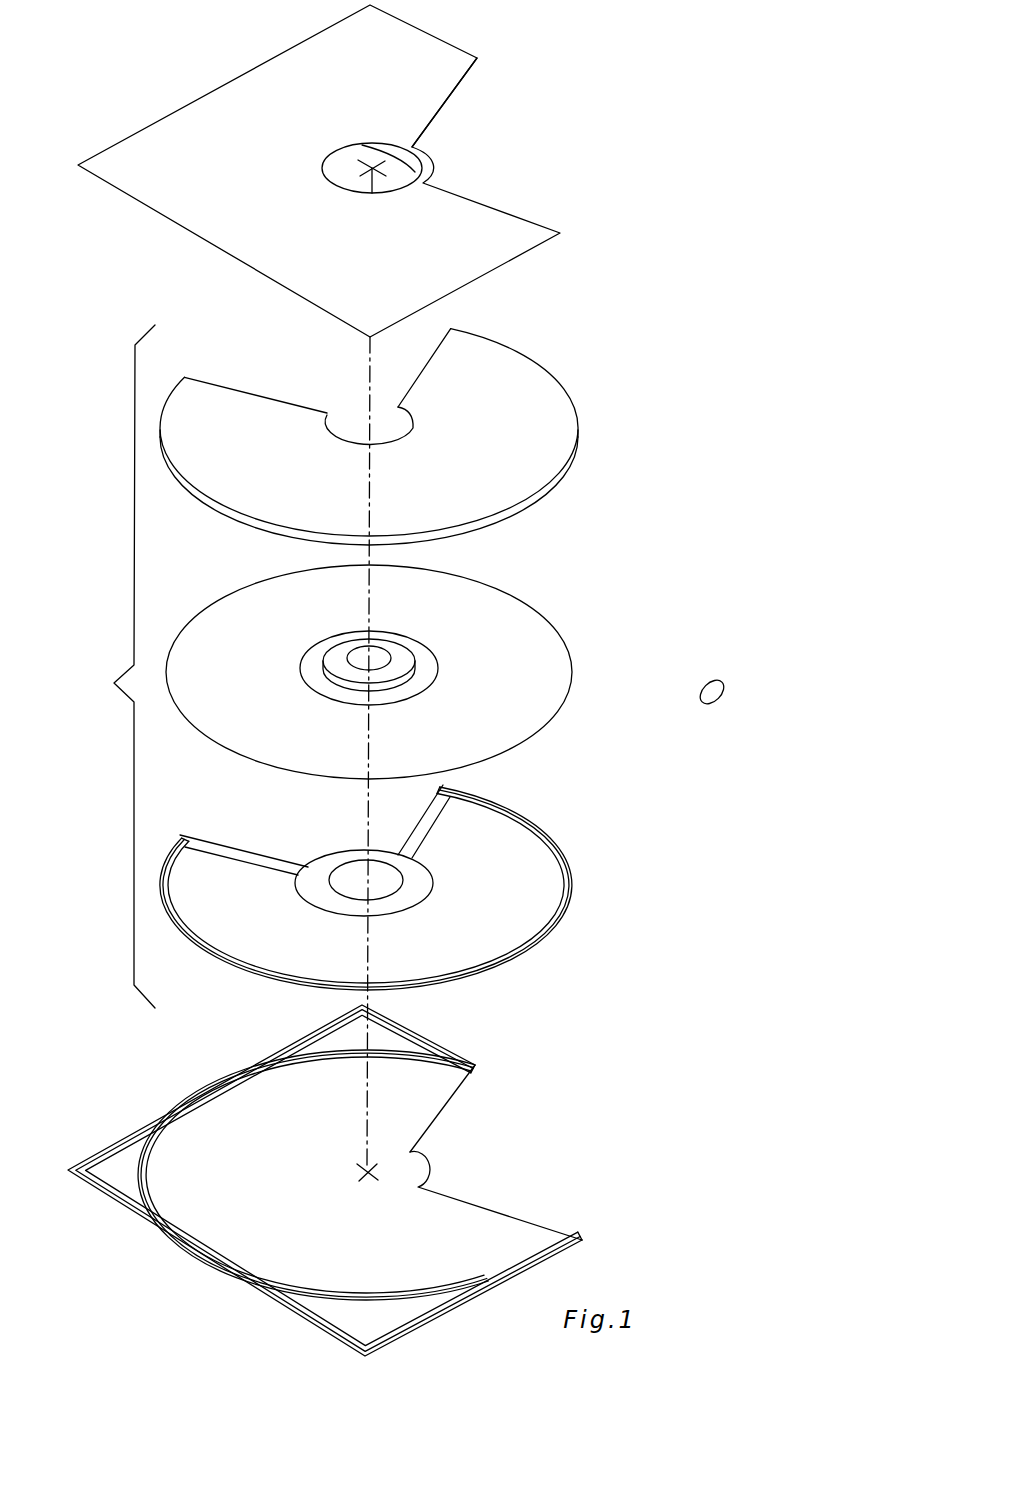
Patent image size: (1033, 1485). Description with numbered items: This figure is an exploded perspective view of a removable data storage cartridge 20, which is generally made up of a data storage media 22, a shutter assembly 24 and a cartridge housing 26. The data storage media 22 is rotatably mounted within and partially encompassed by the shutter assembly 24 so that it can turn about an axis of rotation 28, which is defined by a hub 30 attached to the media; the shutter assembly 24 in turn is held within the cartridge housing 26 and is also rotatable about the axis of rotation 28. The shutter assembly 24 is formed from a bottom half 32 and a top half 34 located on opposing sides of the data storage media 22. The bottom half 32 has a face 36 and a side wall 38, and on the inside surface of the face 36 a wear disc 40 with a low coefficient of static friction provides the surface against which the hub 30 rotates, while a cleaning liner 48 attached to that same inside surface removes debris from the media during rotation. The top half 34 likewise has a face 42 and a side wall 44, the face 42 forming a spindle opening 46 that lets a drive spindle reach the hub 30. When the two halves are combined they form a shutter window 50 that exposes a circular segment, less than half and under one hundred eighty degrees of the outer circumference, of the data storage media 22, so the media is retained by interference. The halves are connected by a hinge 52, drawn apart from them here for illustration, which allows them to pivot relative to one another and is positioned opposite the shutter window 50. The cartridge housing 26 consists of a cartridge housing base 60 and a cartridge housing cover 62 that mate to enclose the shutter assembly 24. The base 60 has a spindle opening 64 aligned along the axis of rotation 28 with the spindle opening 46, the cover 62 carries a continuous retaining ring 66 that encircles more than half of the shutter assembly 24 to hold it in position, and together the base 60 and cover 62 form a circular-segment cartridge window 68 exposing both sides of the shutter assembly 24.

The removable data storage cartridge 20 is at (680, 132).
The data storage media 22 is at (369, 662).
The shutter assembly 24 is at (363, 662).
The cartridge housing 26 is at (472, 49).
The axis of rotation 28 is at (367, 362).
The hub 30 is at (340, 655).
The bottom half 32 is at (402, 877).
The top half 34 is at (401, 430).
The face 36 is at (548, 845).
The side wall 38 is at (510, 807).
The wear disc 40 is at (342, 878).
The face 42 is at (543, 370).
The side wall 44 is at (545, 492).
The spindle opening 46 is at (400, 440).
The cleaning liner 48 is at (240, 930).
The shutter window 50 is at (207, 387).
The hinge 52 is at (720, 676).
The cartridge housing base 60 is at (335, 171).
The cartridge housing cover 62 is at (325, 1180).
The spindle opening 64 is at (417, 172).
The retaining ring 66 is at (418, 1062).
The cartridge window 68 is at (458, 90).